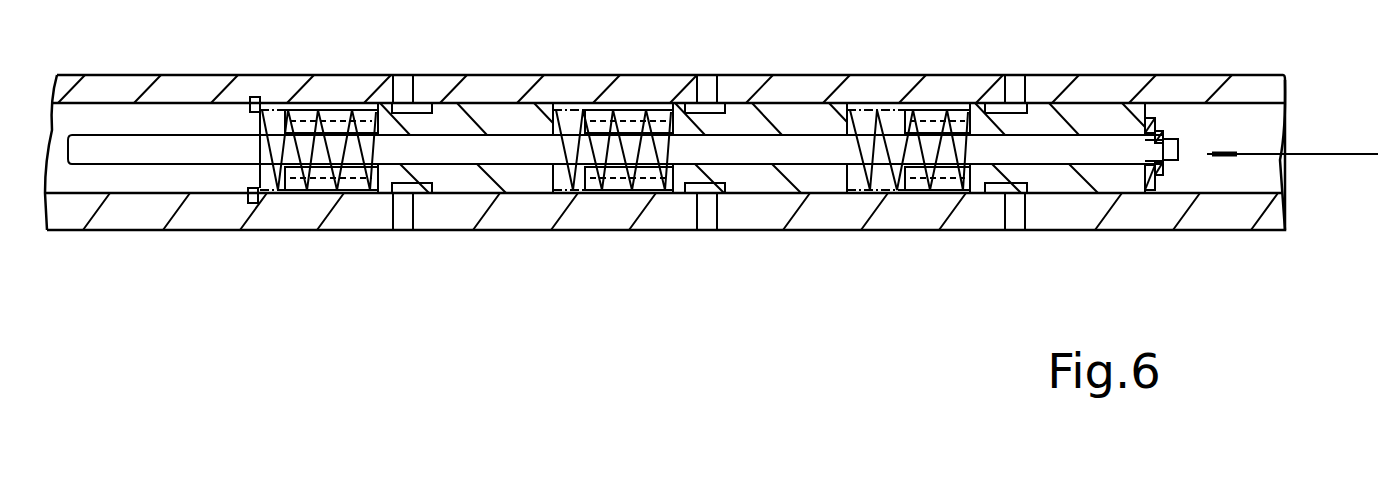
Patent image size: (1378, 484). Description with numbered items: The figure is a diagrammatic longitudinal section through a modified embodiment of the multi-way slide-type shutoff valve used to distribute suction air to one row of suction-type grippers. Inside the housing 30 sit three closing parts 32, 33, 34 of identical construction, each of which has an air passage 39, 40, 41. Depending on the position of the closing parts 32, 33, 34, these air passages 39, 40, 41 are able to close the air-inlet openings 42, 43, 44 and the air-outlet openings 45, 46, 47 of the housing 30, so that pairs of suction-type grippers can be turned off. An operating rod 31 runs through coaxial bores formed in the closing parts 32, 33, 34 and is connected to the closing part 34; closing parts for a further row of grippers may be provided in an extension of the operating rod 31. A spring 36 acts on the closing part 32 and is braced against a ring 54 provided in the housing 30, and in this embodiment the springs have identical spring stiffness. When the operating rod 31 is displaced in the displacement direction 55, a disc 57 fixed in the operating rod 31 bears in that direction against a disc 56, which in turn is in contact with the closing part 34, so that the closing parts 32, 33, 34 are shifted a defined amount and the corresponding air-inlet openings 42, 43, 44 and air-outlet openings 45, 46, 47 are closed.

The housing 30 is at (1126, 92).
The operating rod 31 is at (1180, 158).
The closing part 32 is at (491, 108).
The closing part 33 is at (783, 118).
The closing part 34 is at (1067, 100).
The spring 36 is at (327, 115).
The air passage 39 is at (418, 194).
The air passage 40 is at (718, 196).
The air passage 41 is at (1020, 200).
The air-inlet opening 42 is at (405, 92).
The air-inlet opening 43 is at (705, 92).
The air-inlet opening 44 is at (1015, 90).
The air-outlet opening 45 is at (400, 218).
The air-outlet opening 46 is at (703, 218).
The air-outlet opening 47 is at (1012, 220).
The ring 54 is at (253, 96).
The displacement direction 55 is at (1350, 154).
The disc 56 is at (1157, 118).
The disc 57 is at (1163, 192).